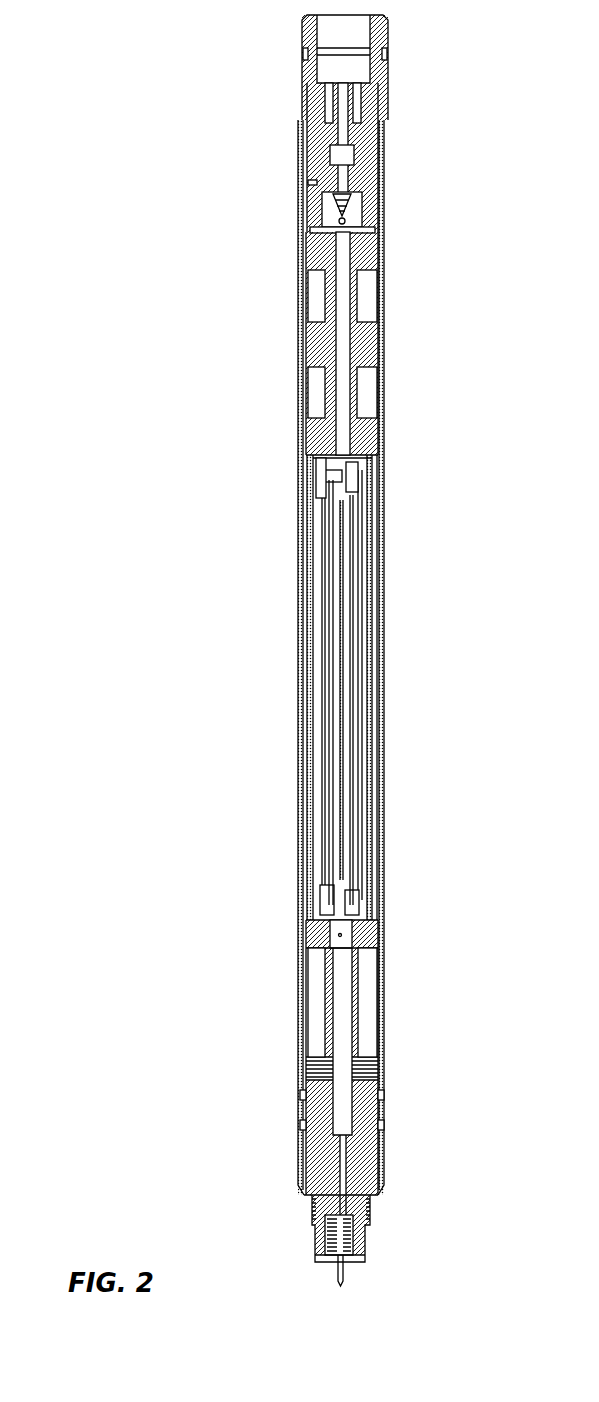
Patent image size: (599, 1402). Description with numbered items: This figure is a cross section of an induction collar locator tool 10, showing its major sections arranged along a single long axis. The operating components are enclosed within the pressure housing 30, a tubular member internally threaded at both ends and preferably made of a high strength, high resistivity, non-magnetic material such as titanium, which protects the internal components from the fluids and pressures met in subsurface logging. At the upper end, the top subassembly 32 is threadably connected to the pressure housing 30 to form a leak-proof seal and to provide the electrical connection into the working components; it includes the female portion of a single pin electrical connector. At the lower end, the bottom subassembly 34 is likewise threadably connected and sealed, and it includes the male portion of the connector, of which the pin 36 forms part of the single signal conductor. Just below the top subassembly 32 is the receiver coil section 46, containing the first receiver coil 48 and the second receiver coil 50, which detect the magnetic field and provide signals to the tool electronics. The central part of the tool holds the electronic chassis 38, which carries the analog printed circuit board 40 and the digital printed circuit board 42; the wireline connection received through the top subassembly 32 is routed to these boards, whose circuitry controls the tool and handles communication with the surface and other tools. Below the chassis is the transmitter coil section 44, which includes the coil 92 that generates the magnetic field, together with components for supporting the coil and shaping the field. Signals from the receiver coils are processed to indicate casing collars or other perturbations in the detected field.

The induction collar locator tool 10 is at (176, 75).
The pressure housing 30 is at (288, 1165).
The top subassembly 32 is at (397, 160).
The bottom subassembly 34 is at (391, 1204).
The pin 36 is at (363, 1289).
The electronic chassis 38 is at (411, 688).
The analog printed circuit board 40 is at (392, 700).
The digital printed circuit board 42 is at (330, 535).
The transmitter coil section 44 is at (390, 1062).
The receiver coil section 46 is at (395, 321).
The first receiver coil 48 is at (388, 387).
The second receiver coil 50 is at (368, 287).
The coil 92 is at (390, 994).